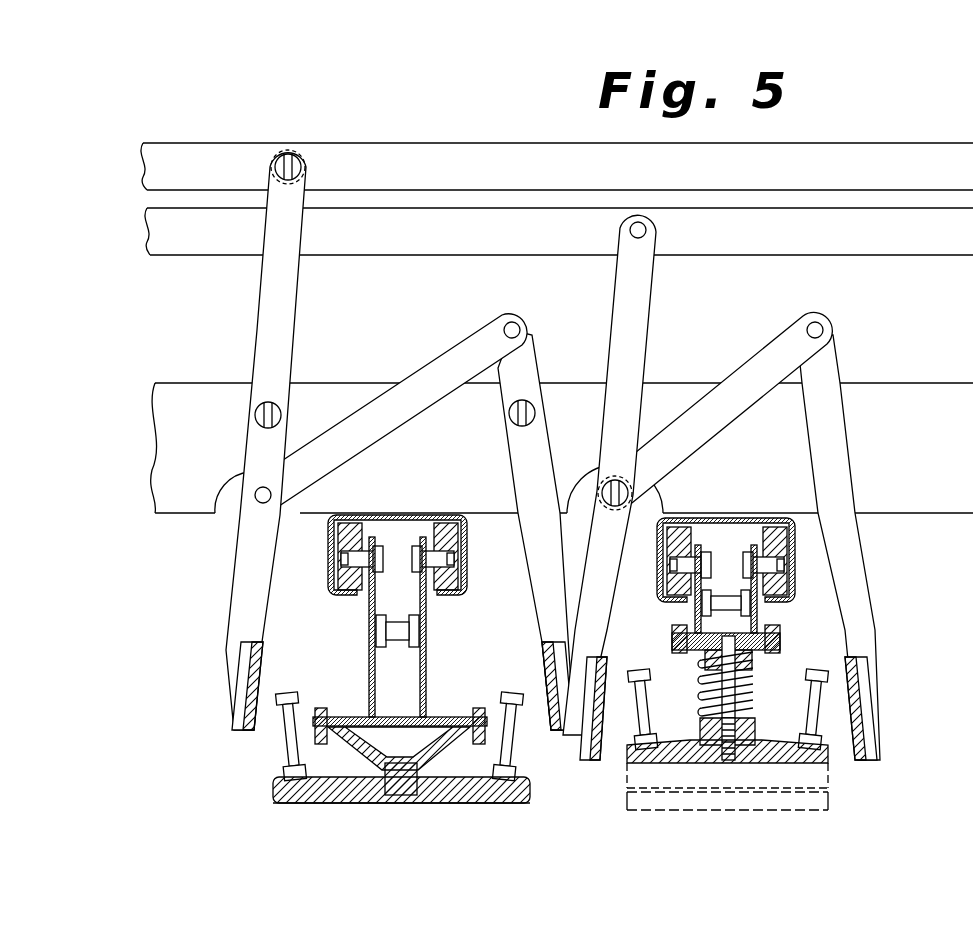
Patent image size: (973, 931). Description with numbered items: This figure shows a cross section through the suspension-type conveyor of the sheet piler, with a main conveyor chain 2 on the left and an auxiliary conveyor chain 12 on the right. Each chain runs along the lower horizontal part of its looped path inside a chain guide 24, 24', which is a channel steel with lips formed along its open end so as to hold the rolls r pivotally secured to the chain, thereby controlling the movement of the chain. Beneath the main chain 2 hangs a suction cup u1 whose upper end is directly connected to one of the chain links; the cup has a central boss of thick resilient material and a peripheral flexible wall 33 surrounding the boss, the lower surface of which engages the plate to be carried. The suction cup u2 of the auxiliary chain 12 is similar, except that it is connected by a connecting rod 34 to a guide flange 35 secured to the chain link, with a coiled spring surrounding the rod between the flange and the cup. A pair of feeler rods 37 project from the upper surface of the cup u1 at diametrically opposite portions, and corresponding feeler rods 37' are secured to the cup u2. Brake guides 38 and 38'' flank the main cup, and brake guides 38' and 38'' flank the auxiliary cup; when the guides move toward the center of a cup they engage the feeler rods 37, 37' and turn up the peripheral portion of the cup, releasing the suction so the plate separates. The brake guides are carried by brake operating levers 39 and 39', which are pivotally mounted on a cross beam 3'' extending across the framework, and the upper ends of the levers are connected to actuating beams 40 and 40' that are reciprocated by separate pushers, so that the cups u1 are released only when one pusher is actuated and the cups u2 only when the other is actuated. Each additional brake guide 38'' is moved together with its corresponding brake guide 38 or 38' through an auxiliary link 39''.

The actuating beam 40 is at (557, 144).
The actuating beam 40' is at (559, 260).
The brake operating lever 39 is at (354, 440).
The brake operating lever 39' is at (649, 475).
The auxiliary link 39'' is at (540, 397).
The cross beam 3'' is at (539, 422).
The roll r is at (445, 530).
The chain guide 24 is at (372, 561).
The chain guide 24' is at (707, 570).
The brake guide 38 is at (280, 684).
The brake guide 38' is at (638, 708).
The additional brake guide 38'' is at (713, 545).
The main conveyor chain 2 is at (426, 662).
The auxiliary conveyor chain 12 is at (758, 626).
The guide flange 35 is at (775, 662).
The connecting rod 34 is at (730, 705).
The feeler rod 37 is at (368, 739).
The feeler rod 37' is at (724, 690).
The peripheral flexible wall 33 is at (328, 800).
The suction cup u1 is at (535, 793).
The suction cup u2 is at (830, 770).